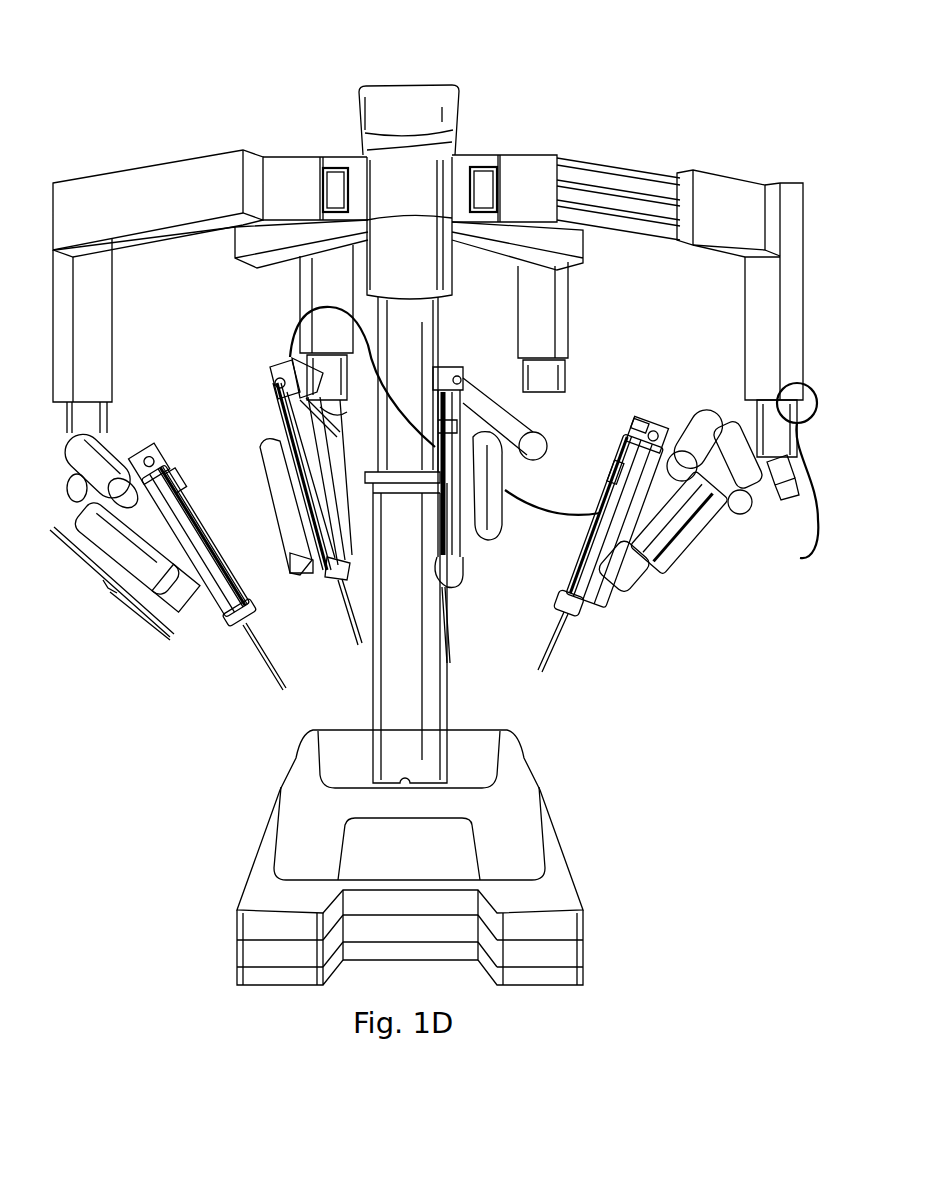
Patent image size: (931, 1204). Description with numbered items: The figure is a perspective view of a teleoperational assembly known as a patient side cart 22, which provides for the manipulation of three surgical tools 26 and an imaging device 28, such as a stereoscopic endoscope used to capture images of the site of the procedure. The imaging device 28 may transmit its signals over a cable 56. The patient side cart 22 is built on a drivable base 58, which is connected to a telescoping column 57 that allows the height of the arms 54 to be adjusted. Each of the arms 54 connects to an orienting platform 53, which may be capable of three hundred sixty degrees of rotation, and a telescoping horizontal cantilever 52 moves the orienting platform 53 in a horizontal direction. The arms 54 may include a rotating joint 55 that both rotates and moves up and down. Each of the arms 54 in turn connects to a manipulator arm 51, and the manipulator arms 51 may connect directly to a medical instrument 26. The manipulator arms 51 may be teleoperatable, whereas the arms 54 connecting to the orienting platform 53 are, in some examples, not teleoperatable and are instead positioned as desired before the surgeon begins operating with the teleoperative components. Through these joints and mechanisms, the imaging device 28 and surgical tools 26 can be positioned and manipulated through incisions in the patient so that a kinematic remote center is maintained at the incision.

The patient side cart 22 is at (224, 79).
The surgical tools 26 is at (210, 528).
The imaging device 28 is at (283, 370).
The manipulator arm 51 is at (110, 588).
The telescoping horizontal cantilever 52 is at (424, 78).
The orienting platform 53 is at (398, 170).
The arms 54 is at (768, 158).
The rotating joint 55 is at (752, 412).
The cable 56 is at (815, 512).
The telescoping column 57 is at (380, 688).
The drivable base 58 is at (568, 886).